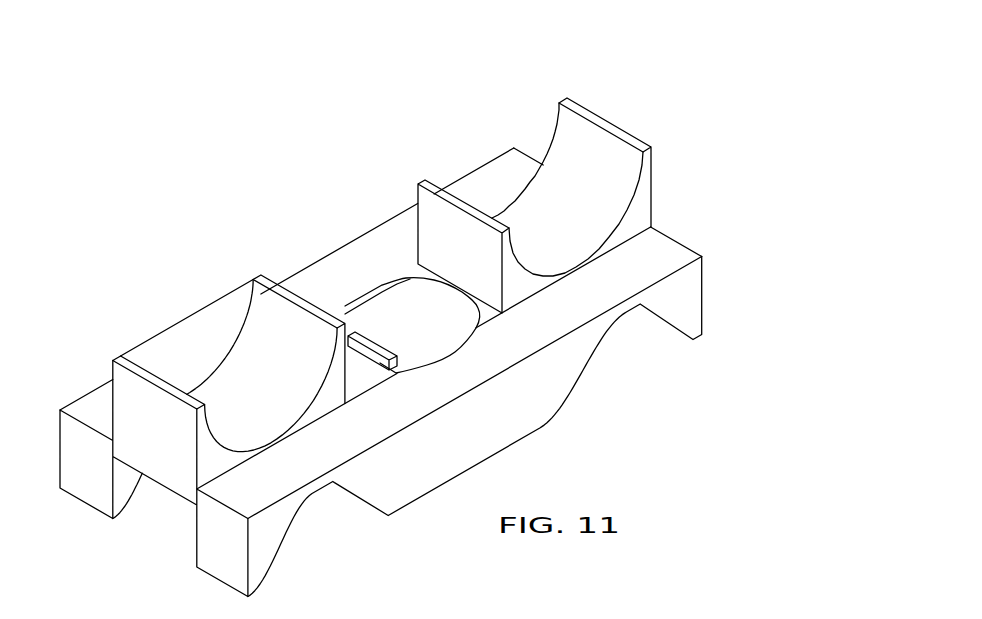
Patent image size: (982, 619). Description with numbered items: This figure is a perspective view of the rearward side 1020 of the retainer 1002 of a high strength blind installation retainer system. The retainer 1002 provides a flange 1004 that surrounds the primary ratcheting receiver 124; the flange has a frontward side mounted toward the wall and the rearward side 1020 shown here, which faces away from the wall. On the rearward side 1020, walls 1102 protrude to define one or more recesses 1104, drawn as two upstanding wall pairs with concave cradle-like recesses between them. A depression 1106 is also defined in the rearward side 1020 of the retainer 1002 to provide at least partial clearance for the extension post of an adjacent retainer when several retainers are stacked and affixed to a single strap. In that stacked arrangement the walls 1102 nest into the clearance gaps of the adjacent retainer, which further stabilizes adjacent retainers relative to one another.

The retainer 1002 is at (416, 372).
The flange 1004 is at (694, 318).
The rearward side 1020 is at (676, 248).
The walls 1102 is at (156, 370).
The recesses 1104 is at (294, 392).
The depression 1106 is at (444, 331).
The primary ratcheting receiver 124 is at (370, 362).